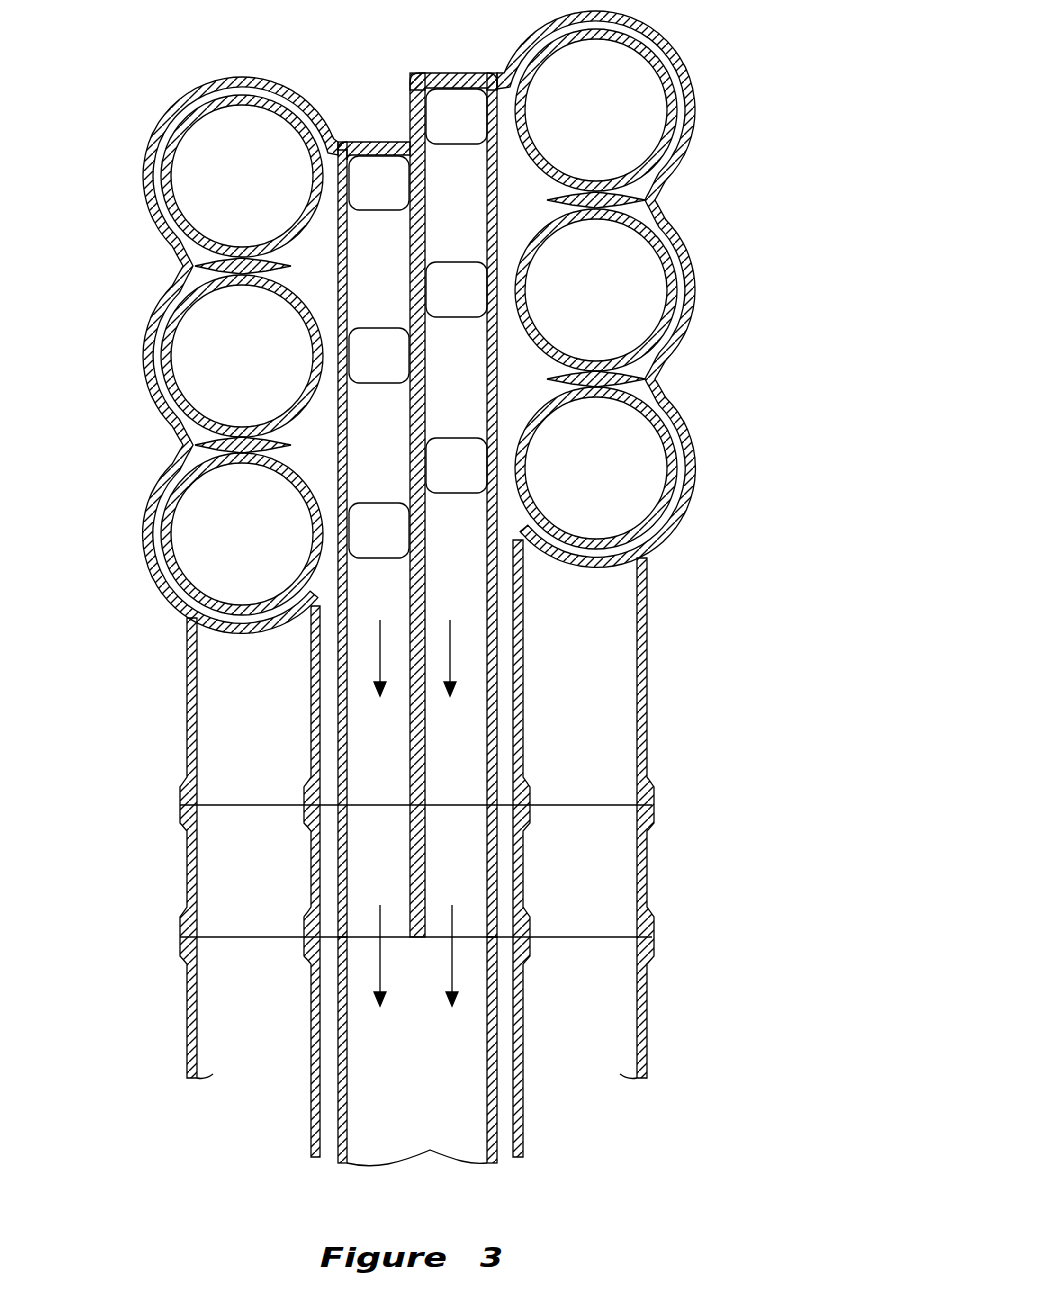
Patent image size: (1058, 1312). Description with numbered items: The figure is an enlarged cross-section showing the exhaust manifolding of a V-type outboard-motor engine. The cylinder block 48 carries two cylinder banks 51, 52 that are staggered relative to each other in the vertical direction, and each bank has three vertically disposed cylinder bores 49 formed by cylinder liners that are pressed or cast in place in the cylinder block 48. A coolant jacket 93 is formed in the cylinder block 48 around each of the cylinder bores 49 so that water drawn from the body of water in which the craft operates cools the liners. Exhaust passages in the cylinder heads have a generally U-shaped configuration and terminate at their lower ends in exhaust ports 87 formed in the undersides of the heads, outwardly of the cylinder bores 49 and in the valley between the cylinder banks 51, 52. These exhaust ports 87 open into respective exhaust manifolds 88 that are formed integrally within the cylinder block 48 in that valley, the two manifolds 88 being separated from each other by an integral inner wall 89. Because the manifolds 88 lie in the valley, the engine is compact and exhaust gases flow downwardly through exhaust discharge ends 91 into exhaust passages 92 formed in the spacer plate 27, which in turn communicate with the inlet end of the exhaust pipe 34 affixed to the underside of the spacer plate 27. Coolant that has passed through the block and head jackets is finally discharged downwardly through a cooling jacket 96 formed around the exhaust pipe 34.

The spacer plate 27 is at (646, 880).
The exhaust pipe 34 is at (480, 1057).
The cylinder block 48 is at (455, 68).
The cylinder bores 49 is at (183, 180).
The cylinder bank 51 is at (190, 88).
The cylinder bank 52 is at (698, 252).
The exhaust ports 87 is at (458, 146).
The exhaust manifolds 88 is at (477, 598).
The inner wall 89 is at (428, 735).
The exhaust discharge ends 91 is at (340, 820).
The exhaust passages 92 is at (355, 893).
The coolant jacket 93 is at (187, 268).
The cooling jacket 96 is at (325, 1043).